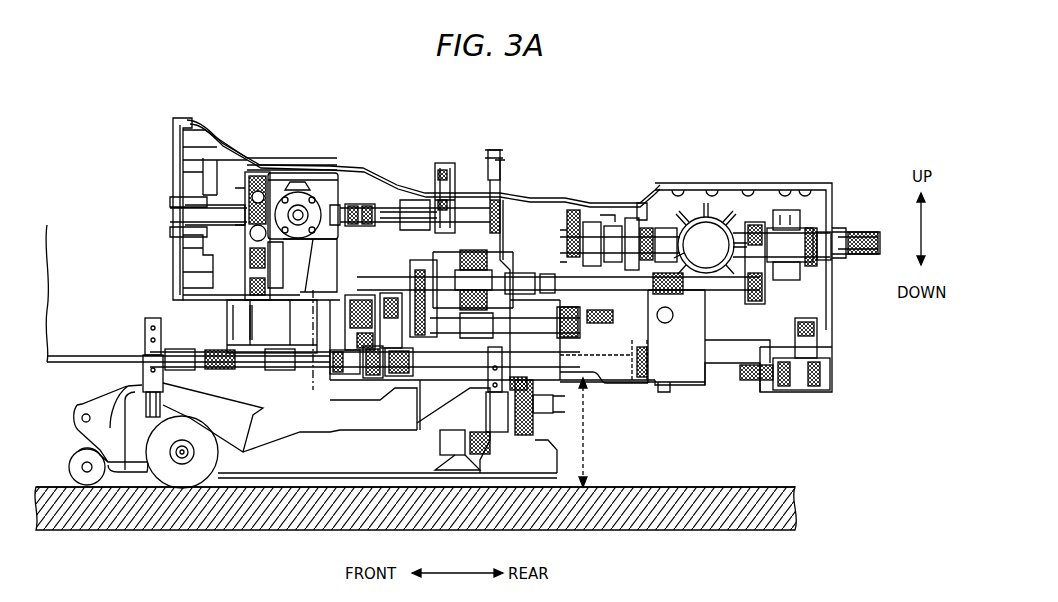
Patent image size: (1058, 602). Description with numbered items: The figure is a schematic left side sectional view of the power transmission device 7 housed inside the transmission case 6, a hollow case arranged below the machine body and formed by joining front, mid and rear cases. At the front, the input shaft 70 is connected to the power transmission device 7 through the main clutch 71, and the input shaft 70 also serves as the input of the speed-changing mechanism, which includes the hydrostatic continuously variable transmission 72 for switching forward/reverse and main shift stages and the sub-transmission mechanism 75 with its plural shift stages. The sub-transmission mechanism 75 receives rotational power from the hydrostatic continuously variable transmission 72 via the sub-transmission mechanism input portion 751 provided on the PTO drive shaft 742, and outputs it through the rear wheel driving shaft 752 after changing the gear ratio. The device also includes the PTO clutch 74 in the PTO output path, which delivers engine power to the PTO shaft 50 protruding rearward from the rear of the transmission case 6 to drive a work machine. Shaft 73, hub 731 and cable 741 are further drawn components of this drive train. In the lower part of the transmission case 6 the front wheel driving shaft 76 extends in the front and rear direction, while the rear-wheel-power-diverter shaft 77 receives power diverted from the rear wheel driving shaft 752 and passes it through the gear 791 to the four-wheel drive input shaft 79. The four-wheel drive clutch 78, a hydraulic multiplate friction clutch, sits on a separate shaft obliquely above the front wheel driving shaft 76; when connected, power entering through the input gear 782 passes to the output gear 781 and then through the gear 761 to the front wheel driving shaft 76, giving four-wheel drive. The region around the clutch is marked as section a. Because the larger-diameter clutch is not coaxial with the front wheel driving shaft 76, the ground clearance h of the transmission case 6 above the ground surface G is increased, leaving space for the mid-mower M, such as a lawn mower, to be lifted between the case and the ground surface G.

The transmission case 6 is at (661, 163).
The power transmission device 7 is at (515, 211).
The PTO shaft 50 is at (855, 235).
The input shaft 70 is at (230, 188).
The main clutch 71 is at (201, 128).
The hydrostatic continuously variable transmission 72 is at (302, 171).
The input shaft 73 is at (418, 254).
The PTO clutch 74 is at (468, 246).
The sub-transmission mechanism 75 is at (606, 213).
The front wheel driving shaft 76 is at (320, 380).
The rear-wheel-power-diverter shaft 77 is at (440, 405).
The four-wheel drive clutch 78 is at (365, 286).
The four-wheel drive input shaft 79 is at (378, 380).
The hub 731 is at (348, 203).
The cable 741 is at (392, 183).
The PTO drive shaft 742 is at (534, 274).
The sub-transmission mechanism input portion 751 is at (590, 372).
The rear wheel driving shaft 752 is at (665, 243).
The gear 761 is at (352, 386).
The output gear 781 is at (318, 304).
The input gear 782 is at (383, 300).
The gear 791 is at (393, 378).
The section a is at (306, 338).
The ground clearance h is at (594, 434).
The mid-mower M is at (70, 406).
The ground surface G is at (672, 487).